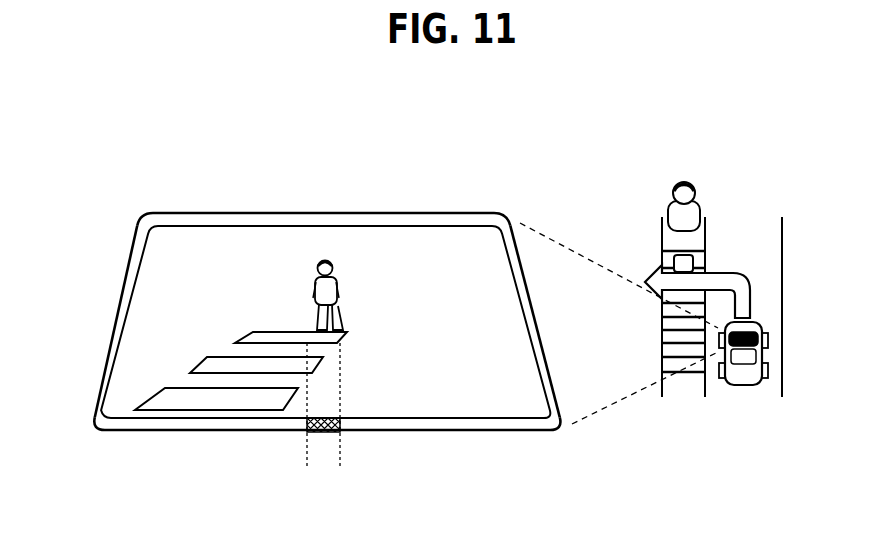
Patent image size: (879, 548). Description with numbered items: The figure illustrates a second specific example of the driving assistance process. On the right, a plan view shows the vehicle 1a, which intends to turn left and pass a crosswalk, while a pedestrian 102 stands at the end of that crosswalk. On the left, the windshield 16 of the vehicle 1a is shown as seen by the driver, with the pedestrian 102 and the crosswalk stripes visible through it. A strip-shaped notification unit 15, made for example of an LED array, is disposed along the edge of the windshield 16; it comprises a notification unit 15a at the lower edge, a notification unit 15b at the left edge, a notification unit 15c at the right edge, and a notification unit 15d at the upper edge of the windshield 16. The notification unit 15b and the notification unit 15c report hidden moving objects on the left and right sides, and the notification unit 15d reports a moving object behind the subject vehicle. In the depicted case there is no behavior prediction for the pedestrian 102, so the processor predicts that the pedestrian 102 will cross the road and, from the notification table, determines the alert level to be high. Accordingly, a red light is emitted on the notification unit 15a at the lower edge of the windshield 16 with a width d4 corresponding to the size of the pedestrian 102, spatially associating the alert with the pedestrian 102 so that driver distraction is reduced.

The notification unit 15 is at (327, 313).
The notification unit at the lower edge of the windshield 15a is at (249, 432).
The notification unit at the left edge of the windshield 15b is at (114, 323).
The notification unit at the right edge of the windshield 15c is at (538, 320).
The notification unit at the upper edge of the windshield 15d is at (221, 213).
The windshield 16 is at (387, 258).
The pedestrian 102 is at (329, 259).
The vehicle 1a is at (766, 352).
The width d4 is at (336, 453).